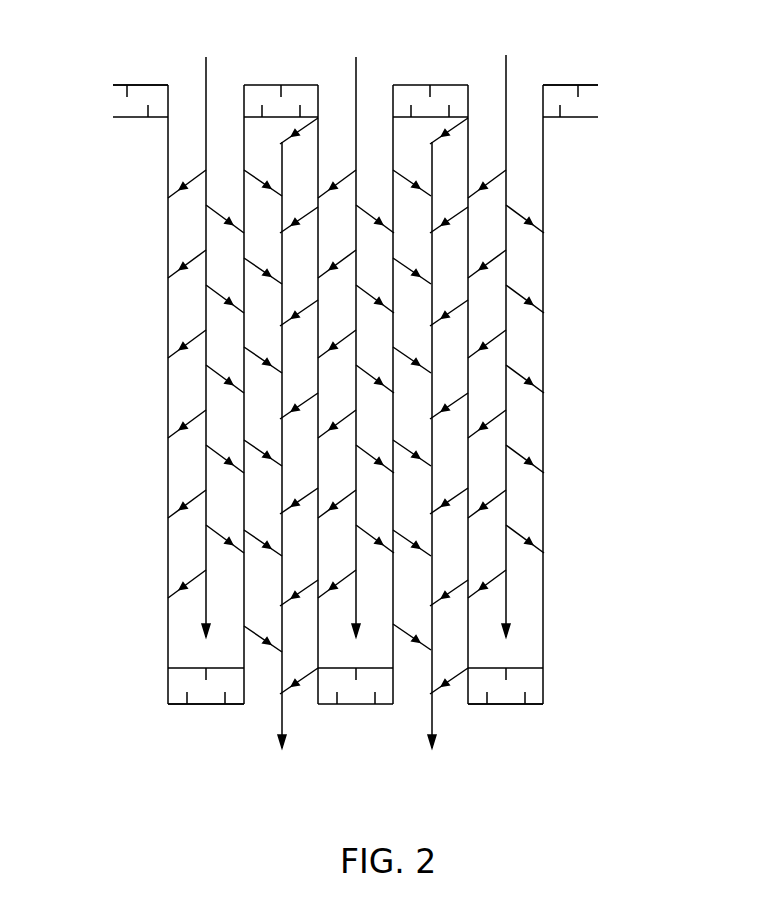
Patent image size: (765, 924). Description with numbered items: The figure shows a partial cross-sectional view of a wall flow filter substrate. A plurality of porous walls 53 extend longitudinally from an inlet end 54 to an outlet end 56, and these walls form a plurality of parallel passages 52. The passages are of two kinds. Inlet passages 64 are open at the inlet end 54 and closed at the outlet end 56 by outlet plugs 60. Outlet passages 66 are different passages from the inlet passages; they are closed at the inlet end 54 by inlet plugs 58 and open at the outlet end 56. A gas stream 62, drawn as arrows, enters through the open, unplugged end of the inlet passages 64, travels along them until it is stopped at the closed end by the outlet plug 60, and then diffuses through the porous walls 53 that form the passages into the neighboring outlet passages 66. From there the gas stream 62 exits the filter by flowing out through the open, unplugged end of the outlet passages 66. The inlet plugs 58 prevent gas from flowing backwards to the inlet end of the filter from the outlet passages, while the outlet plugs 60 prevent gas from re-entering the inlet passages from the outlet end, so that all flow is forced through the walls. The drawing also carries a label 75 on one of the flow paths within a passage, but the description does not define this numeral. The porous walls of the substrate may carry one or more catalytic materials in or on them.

The parallel passages 52 is at (205, 114).
The porous walls 53 is at (393, 357).
The inlet end 54 is at (594, 67).
The outlet end 56 is at (547, 714).
The inlet plugs 58 is at (124, 84).
The outlet plugs 60 is at (207, 706).
The gas stream 62 is at (356, 62).
The inlet passages 64 is at (352, 102).
The outlet passages 66 is at (356, 663).
The sub-channel flow path 75 is at (173, 377).